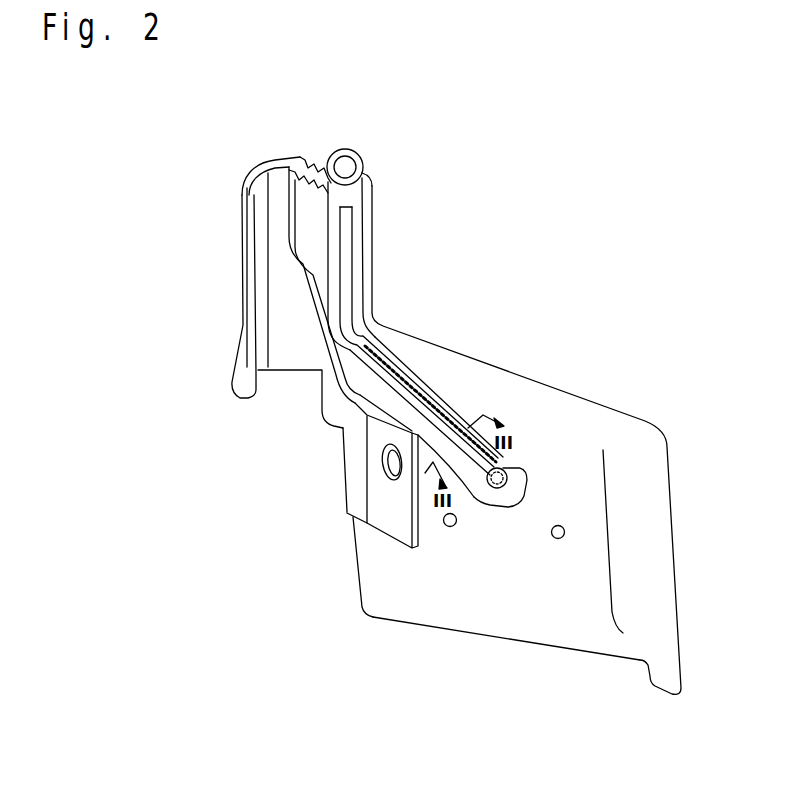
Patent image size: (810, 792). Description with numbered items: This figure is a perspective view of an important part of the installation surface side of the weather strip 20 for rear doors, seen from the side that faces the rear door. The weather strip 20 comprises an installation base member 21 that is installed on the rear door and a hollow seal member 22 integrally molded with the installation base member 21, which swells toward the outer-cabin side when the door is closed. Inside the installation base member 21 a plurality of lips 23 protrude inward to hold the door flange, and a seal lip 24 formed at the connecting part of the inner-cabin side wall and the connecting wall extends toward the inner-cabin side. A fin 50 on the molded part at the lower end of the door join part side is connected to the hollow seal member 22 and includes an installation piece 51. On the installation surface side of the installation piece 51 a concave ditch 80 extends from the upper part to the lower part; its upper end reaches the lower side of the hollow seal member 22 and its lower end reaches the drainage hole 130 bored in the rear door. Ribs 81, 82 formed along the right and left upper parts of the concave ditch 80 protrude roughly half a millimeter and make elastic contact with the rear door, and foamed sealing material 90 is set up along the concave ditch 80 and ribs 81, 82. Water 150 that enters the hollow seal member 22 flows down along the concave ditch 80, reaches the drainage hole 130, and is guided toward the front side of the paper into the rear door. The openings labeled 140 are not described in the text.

The weather strip for rear doors 20 is at (608, 240).
The installation base member 21 is at (285, 159).
The hollow seal member 22 is at (366, 158).
The lips 23 is at (298, 166).
The seal lip 24 is at (244, 180).
The fin 50 is at (530, 387).
The installation piece 51 is at (522, 640).
The concave ditch 80 is at (485, 385).
The rib 81 is at (455, 420).
The rib 82 is at (467, 482).
The foamed sealing material 90 is at (483, 498).
The drainage hole 130 is at (498, 488).
The hole 140 is at (449, 527).
The water 150 is at (343, 158).